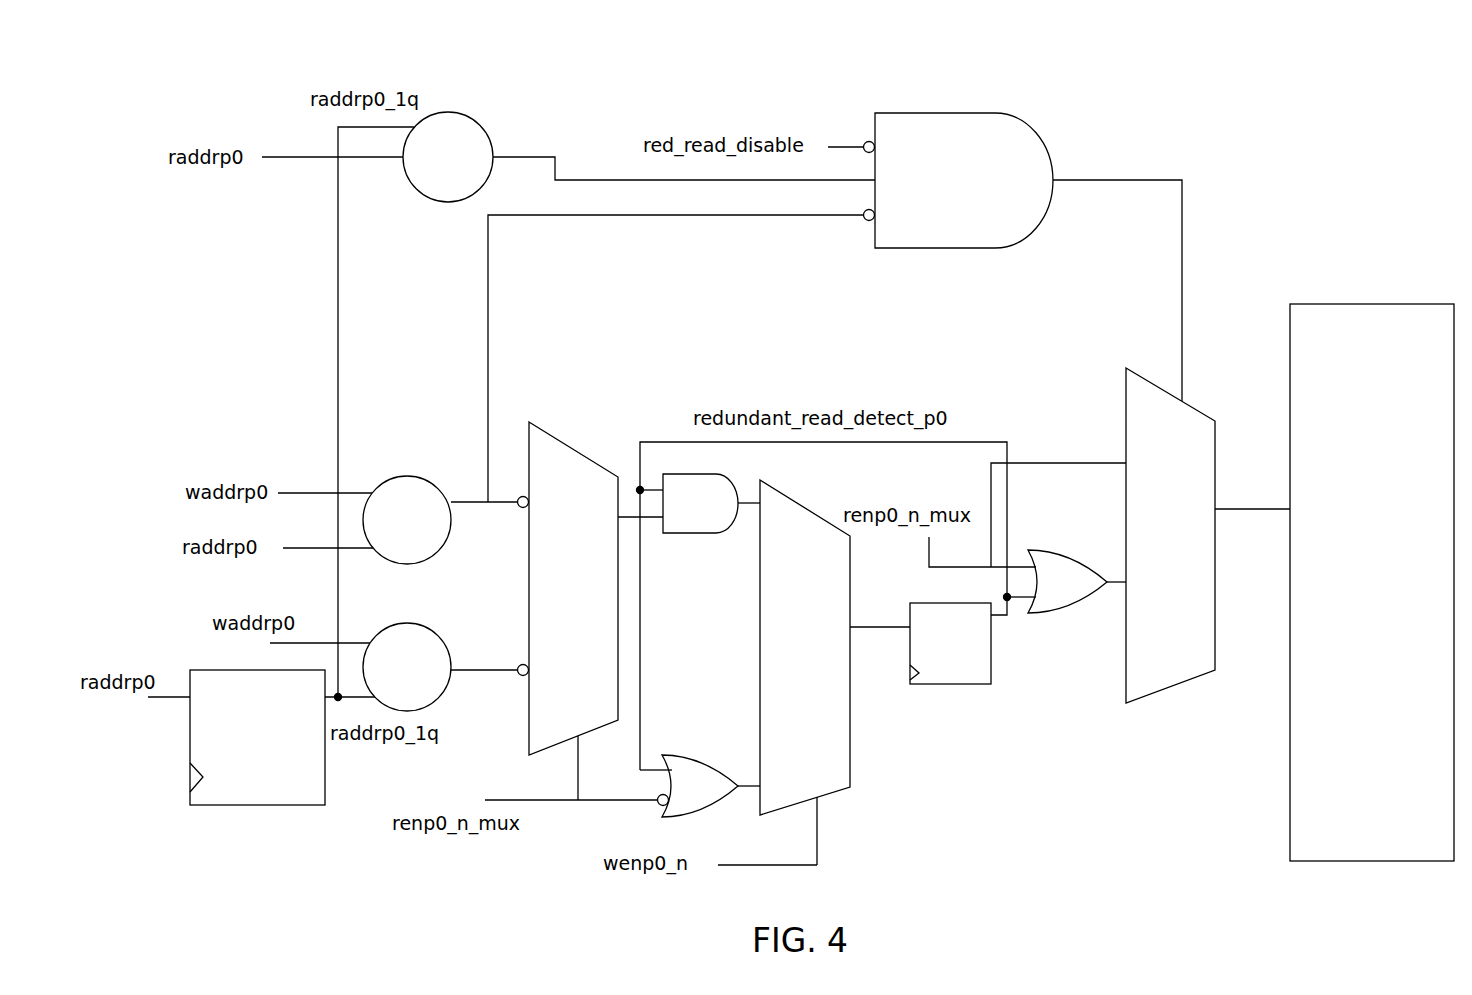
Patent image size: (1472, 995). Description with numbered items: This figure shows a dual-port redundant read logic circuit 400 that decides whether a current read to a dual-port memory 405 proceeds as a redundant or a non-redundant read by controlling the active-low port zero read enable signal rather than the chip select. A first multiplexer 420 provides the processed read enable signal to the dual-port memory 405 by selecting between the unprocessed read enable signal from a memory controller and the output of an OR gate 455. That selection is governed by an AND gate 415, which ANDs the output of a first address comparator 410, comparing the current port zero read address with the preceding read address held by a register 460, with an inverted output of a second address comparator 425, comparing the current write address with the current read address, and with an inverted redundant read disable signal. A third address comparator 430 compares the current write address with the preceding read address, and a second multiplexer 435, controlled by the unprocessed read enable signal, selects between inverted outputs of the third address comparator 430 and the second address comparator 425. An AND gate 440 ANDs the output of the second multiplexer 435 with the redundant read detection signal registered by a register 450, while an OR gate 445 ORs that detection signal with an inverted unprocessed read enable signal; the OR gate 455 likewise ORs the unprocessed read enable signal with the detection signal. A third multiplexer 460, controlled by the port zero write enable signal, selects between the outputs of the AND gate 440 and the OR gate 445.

The dual-port redundant read logic circuit 400 is at (275, 105).
The dual-port memory 405 is at (1373, 304).
The first address comparator 410 is at (483, 128).
The AND gate 415 is at (1000, 113).
The first multiplexer 420 is at (1196, 410).
The second address comparator 425 is at (402, 475).
The third address comparator 430 is at (410, 623).
The second multiplexer 435 is at (553, 433).
The AND gate 440 is at (698, 533).
The OR gate 445 is at (690, 755).
The register 450 is at (948, 684).
The OR gate 455 is at (1067, 613).
The register 460 is at (273, 805).